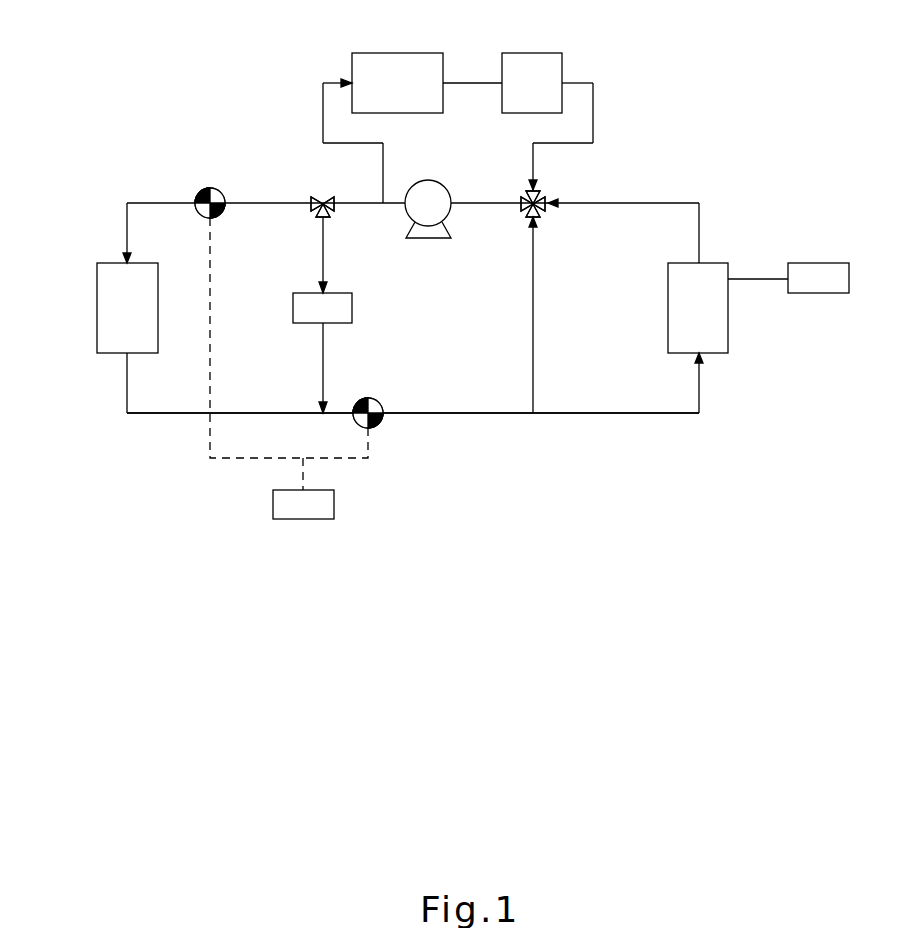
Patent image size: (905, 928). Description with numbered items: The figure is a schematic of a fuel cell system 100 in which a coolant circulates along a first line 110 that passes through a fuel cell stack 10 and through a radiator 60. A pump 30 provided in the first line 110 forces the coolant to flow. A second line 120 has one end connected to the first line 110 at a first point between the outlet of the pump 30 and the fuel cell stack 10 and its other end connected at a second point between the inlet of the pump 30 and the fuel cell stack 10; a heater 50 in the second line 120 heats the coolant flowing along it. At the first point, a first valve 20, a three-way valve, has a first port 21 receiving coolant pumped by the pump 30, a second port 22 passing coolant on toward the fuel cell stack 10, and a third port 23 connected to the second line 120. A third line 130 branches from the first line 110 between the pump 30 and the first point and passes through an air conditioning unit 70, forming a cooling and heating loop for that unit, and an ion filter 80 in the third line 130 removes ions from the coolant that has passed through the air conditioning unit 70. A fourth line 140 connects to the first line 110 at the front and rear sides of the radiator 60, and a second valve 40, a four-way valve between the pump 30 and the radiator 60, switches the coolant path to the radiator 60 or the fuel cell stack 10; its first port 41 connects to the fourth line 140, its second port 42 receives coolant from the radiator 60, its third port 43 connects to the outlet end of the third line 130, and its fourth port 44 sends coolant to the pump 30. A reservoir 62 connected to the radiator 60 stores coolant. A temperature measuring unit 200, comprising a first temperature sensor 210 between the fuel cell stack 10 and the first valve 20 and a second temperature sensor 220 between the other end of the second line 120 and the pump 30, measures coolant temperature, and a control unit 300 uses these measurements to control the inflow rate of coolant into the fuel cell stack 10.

The fuel cell stack 10 is at (96, 306).
The first valve 20 is at (318, 190).
The first port 21 is at (338, 208).
The second port 22 is at (309, 208).
The third port 23 is at (318, 220).
The pump 30 is at (428, 239).
The second valve 40 is at (555, 193).
The first port 41 is at (530, 221).
The second port 42 is at (547, 208).
The third port 43 is at (528, 186).
The fourth port 44 is at (519, 208).
The heater 50 is at (353, 307).
The radiator 60 is at (729, 322).
The reservoir 62 is at (817, 262).
The air conditioning unit 70 is at (397, 52).
The ion filter 80 is at (534, 52).
The fuel cell system 100 is at (535, 436).
The first line 110 is at (441, 414).
The second line 120 is at (322, 369).
The third line 130 is at (331, 80).
The fourth line 140 is at (532, 319).
The temperature measuring unit 200 is at (192, 187).
The first temperature sensor 210 is at (210, 187).
The second temperature sensor 220 is at (368, 397).
The control unit 300 is at (335, 505).